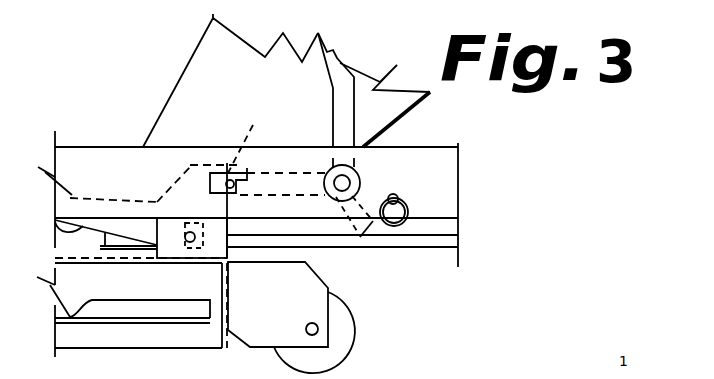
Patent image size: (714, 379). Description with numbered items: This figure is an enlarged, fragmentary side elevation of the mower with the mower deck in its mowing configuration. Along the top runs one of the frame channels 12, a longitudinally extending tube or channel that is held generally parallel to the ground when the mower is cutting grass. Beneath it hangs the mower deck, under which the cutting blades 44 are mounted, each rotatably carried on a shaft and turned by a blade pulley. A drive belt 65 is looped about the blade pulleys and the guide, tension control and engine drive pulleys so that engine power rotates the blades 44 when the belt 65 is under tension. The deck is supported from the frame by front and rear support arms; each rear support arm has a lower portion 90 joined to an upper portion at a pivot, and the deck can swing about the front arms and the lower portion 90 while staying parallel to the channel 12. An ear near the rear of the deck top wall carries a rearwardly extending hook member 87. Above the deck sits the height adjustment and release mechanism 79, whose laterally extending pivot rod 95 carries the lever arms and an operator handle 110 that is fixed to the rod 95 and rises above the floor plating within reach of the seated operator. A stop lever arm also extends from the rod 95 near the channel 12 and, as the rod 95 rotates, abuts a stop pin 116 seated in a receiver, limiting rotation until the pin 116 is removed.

The channel 12 is at (76, 158).
The cutting blade 44 is at (177, 325).
The drive belt 65 is at (413, 253).
The height adjustment and release mechanism 79 is at (378, 118).
The hook member 87 is at (197, 177).
The rear support arm lower portion 90 is at (55, 224).
The pivot rod 95 is at (352, 179).
The operator handle 110 is at (334, 53).
The stop pin 116 is at (408, 193).